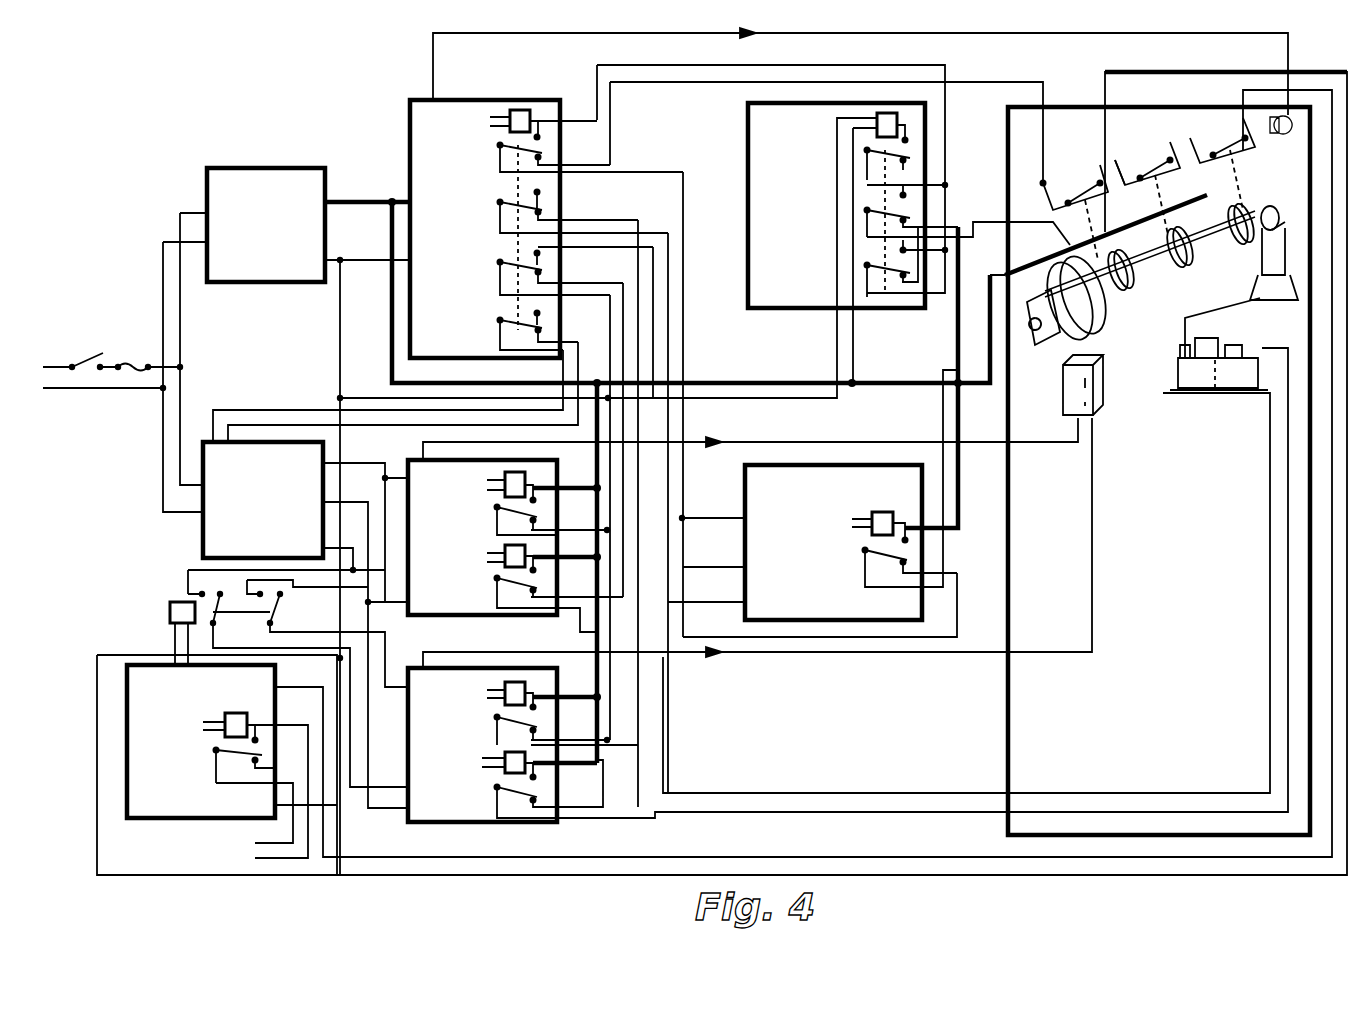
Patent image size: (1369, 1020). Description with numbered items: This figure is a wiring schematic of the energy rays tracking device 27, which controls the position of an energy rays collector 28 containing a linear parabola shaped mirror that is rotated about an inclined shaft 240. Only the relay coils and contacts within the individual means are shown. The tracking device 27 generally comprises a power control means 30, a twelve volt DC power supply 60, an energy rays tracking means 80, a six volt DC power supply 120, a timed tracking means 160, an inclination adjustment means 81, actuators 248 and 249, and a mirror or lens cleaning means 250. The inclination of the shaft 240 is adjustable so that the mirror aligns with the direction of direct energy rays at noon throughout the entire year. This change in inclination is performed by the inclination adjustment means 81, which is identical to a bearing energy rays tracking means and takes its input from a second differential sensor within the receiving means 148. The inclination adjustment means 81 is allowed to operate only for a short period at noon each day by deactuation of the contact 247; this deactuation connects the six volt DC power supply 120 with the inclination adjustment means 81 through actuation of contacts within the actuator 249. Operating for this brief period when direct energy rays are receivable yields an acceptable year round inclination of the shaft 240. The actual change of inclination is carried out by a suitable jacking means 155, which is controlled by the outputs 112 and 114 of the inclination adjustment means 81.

The power control means 30 is at (409, 97).
The 12 volt DC power supply 60 is at (266, 211).
The 6 volt DC power supply 120 is at (203, 536).
The actuator 249 is at (170, 598).
The mirror or lens cleaning means 250 is at (168, 823).
The actuator 248 is at (748, 103).
The energy rays tracking means 80 is at (557, 617).
The inclination adjustment means 81 is at (627, 745).
The output 112 is at (487, 694).
The output 114 is at (481, 768).
The timed tracking means 160 is at (748, 624).
The energy rays collector 28 is at (1135, 480).
The inclined shaft 240 is at (1128, 272).
The contact 247 is at (1215, 148).
The jacking means 155 is at (1234, 294).
The receiving means 148 is at (1098, 418).
The energy rays tracking device 27 is at (930, 877).